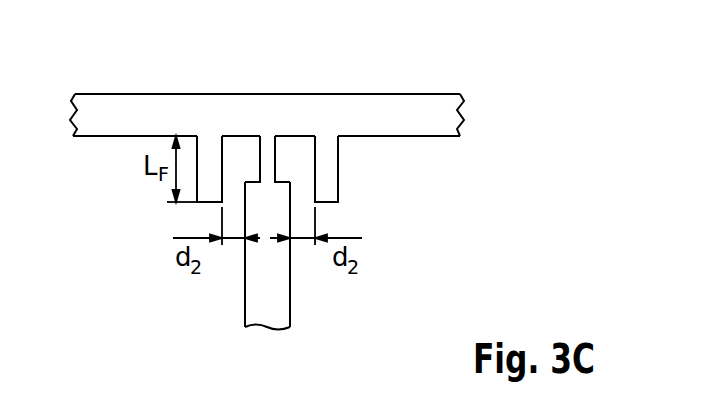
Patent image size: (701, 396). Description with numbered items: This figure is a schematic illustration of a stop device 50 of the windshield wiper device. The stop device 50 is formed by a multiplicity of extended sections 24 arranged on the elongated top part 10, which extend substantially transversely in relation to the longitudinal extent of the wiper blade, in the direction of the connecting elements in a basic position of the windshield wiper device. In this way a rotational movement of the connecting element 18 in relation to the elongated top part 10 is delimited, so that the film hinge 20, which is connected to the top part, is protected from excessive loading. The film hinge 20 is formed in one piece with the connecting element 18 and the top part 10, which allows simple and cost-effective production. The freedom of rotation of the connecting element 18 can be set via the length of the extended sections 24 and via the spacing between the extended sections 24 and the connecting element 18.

The elongated top part 10 is at (96, 116).
The connecting element 18 is at (275, 303).
The film hinge 20 is at (267, 155).
The extended section 24 is at (323, 187).
The stop device 50 is at (372, 210).